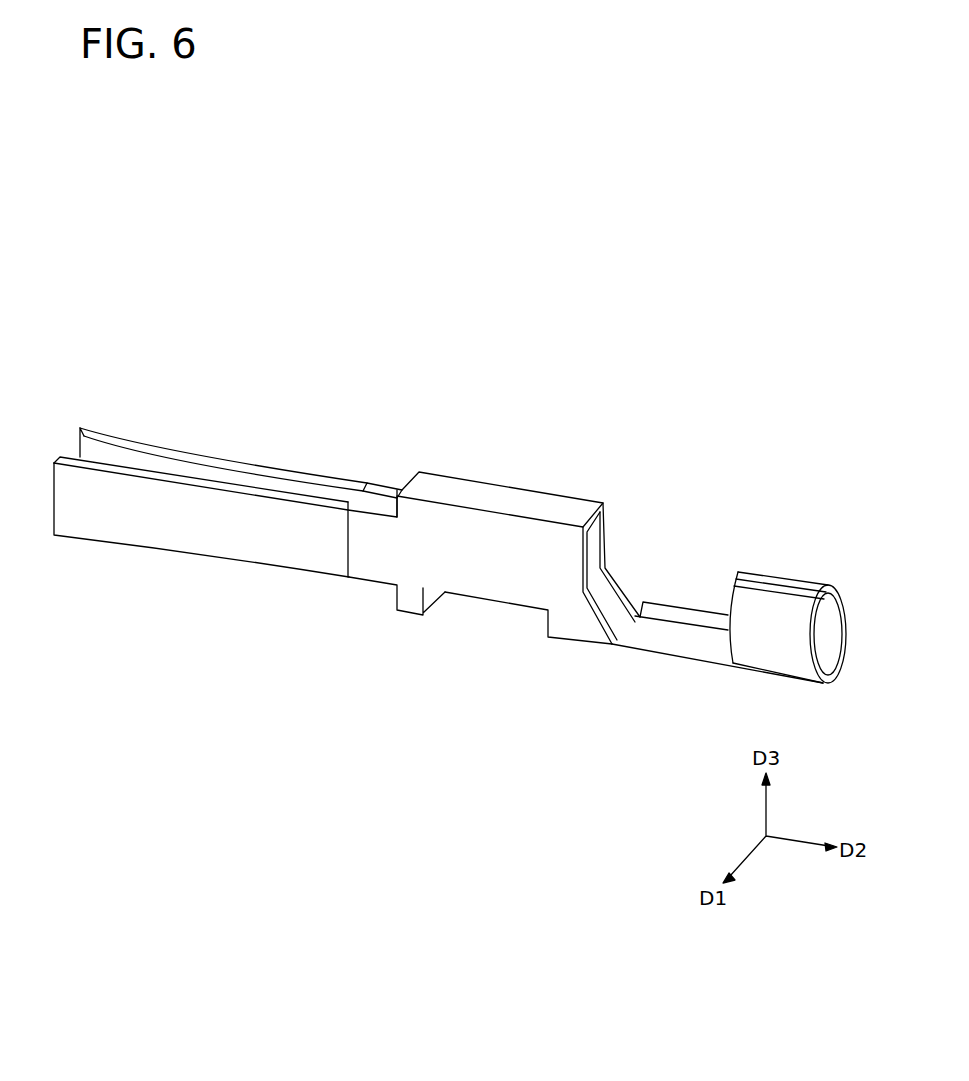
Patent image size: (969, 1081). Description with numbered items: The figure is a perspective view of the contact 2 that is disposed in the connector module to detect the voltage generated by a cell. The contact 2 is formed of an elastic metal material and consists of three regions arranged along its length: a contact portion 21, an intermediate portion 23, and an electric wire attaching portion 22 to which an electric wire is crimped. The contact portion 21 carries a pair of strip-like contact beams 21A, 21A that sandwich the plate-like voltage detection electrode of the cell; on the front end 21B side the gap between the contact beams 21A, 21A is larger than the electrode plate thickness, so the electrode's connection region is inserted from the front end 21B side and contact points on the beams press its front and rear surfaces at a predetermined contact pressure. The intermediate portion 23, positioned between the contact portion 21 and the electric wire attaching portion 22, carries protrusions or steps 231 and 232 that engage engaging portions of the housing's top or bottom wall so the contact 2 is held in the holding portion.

The contact 2 is at (505, 452).
The contact portion 21 is at (153, 440).
The contact beam 21A is at (202, 453).
The front end 21B is at (78, 443).
The electric wire attaching portion 22 is at (747, 572).
The intermediate portion 23 is at (533, 490).
The protrusion or step 231 is at (442, 608).
The protrusion or step 232 is at (542, 625).